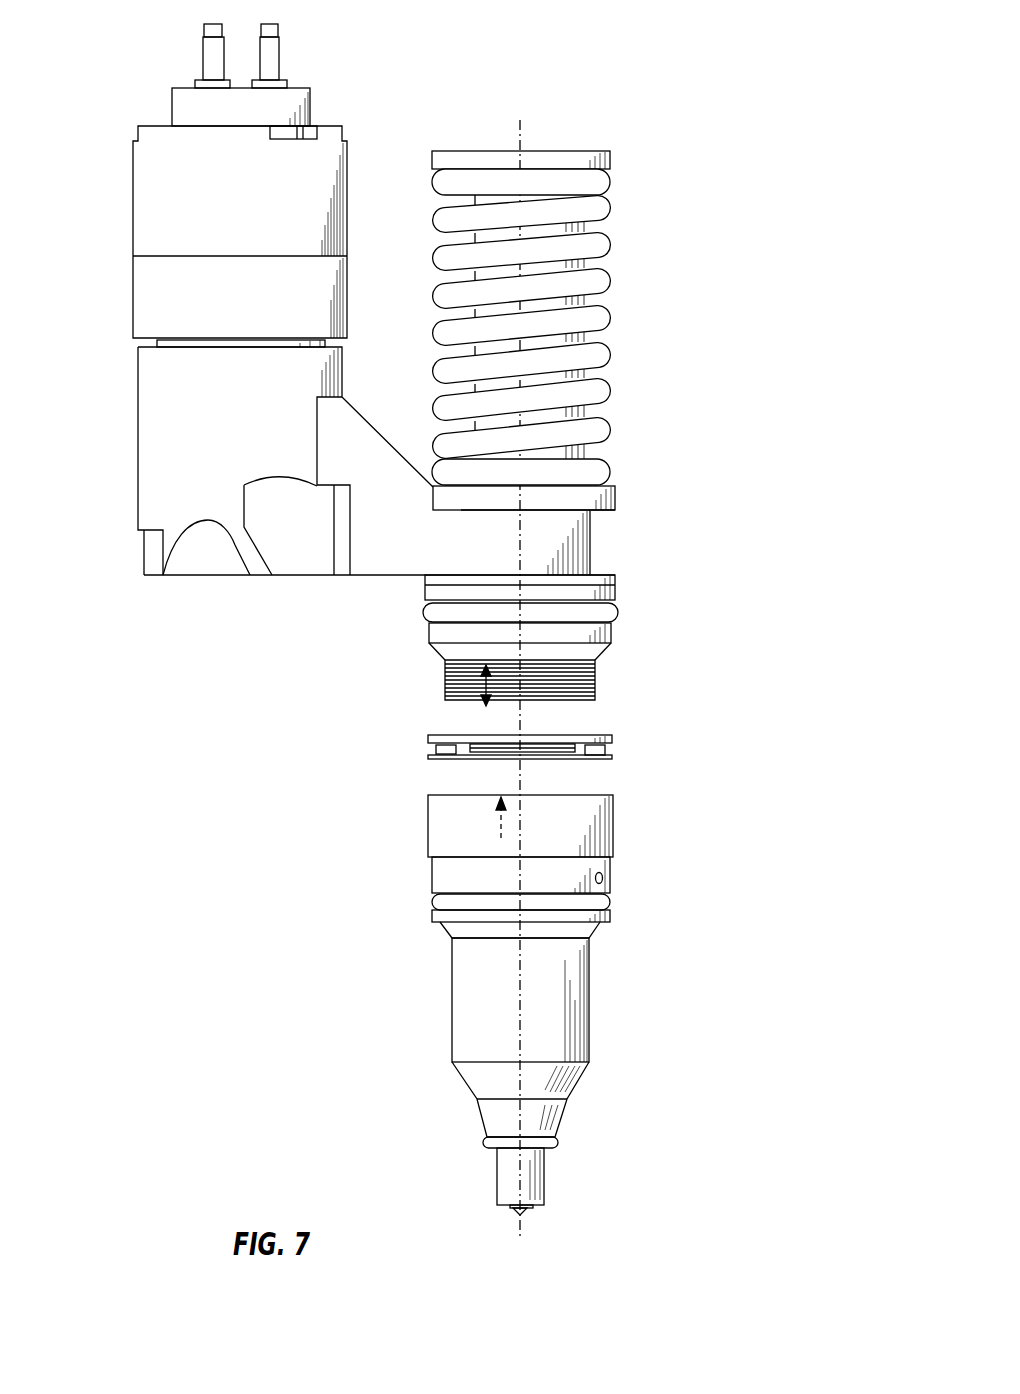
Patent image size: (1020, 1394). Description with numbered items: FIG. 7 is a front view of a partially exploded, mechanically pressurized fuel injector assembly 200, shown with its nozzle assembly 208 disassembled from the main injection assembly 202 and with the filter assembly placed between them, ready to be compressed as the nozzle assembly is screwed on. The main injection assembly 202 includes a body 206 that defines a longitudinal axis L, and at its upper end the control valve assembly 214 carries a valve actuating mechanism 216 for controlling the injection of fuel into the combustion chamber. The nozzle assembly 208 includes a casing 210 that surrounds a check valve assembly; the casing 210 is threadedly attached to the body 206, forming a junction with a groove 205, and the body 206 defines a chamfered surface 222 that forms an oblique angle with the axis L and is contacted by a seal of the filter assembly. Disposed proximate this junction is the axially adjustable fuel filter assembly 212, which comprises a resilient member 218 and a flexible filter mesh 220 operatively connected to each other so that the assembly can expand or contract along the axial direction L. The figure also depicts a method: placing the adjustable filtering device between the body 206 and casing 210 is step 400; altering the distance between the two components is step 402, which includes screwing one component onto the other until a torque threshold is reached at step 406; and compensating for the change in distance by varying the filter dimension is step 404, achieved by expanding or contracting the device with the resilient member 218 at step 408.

The fuel injector assembly 200 is at (683, 57).
The main injection assembly 202 is at (692, 152).
The control valve assembly 214 is at (335, 299).
The valve actuating mechanism 216 is at (325, 190).
The body 206 is at (609, 643).
The chamfered surface 222 is at (604, 651).
The groove 205 is at (440, 660).
The compensation step 404 is at (478, 681).
The biasing step 408 is at (478, 690).
The placing step 400 is at (600, 727).
The axially adjustable fuel filter assembly 212 is at (506, 761).
The resilient member 218 is at (606, 751).
The flexible filter mesh 220 is at (450, 758).
The nozzle assembly 208 is at (412, 795).
The altering step 402 is at (498, 814).
The screwing step 406 is at (503, 1012).
The casing 210 is at (575, 1078).
The longitudinal axis L is at (520, 1226).